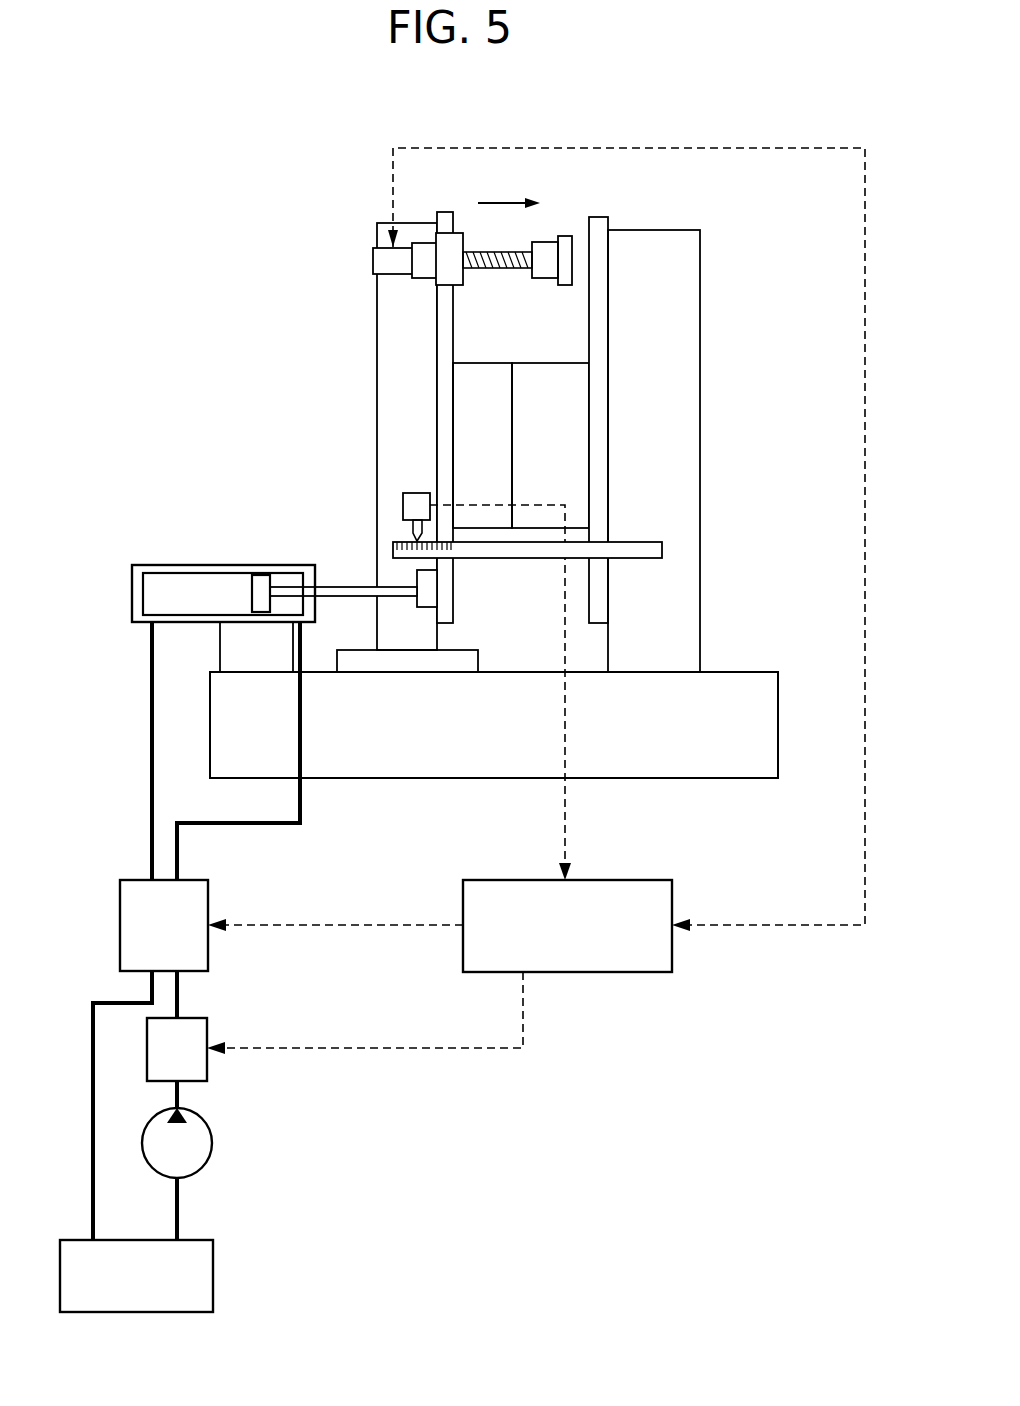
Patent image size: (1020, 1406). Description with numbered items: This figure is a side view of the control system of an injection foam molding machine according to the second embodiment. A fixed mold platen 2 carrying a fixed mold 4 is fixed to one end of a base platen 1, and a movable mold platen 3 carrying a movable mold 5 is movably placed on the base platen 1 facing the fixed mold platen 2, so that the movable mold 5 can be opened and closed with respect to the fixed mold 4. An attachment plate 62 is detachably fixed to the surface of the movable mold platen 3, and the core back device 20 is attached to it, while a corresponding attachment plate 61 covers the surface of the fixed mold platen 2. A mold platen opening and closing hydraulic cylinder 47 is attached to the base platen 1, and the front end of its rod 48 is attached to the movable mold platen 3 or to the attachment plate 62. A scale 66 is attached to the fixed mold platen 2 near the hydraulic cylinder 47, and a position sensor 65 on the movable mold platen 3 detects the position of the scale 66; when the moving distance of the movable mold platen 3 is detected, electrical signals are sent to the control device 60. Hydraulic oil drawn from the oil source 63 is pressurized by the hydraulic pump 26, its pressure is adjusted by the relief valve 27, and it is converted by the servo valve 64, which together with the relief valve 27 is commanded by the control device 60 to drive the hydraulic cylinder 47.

The base platen 1 is at (733, 672).
The fixed mold platen 2 is at (700, 302).
The movable mold platen 3 is at (378, 332).
The fixed mold 4 is at (540, 362).
The movable mold 5 is at (478, 362).
The core back device 20 is at (452, 178).
The hydraulic pump 26 is at (212, 1141).
The relief valve 27 is at (207, 1035).
The mold platen opening and closing hydraulic cylinder 47 is at (188, 565).
The rod 48 is at (353, 587).
The control device 60 is at (610, 880).
The attachment plate 61 is at (598, 217).
The attachment plate 62 is at (453, 588).
The oil source 63 is at (213, 1275).
The servo valve 64 is at (200, 880).
The position sensor 65 is at (416, 492).
The scale 66 is at (644, 542).